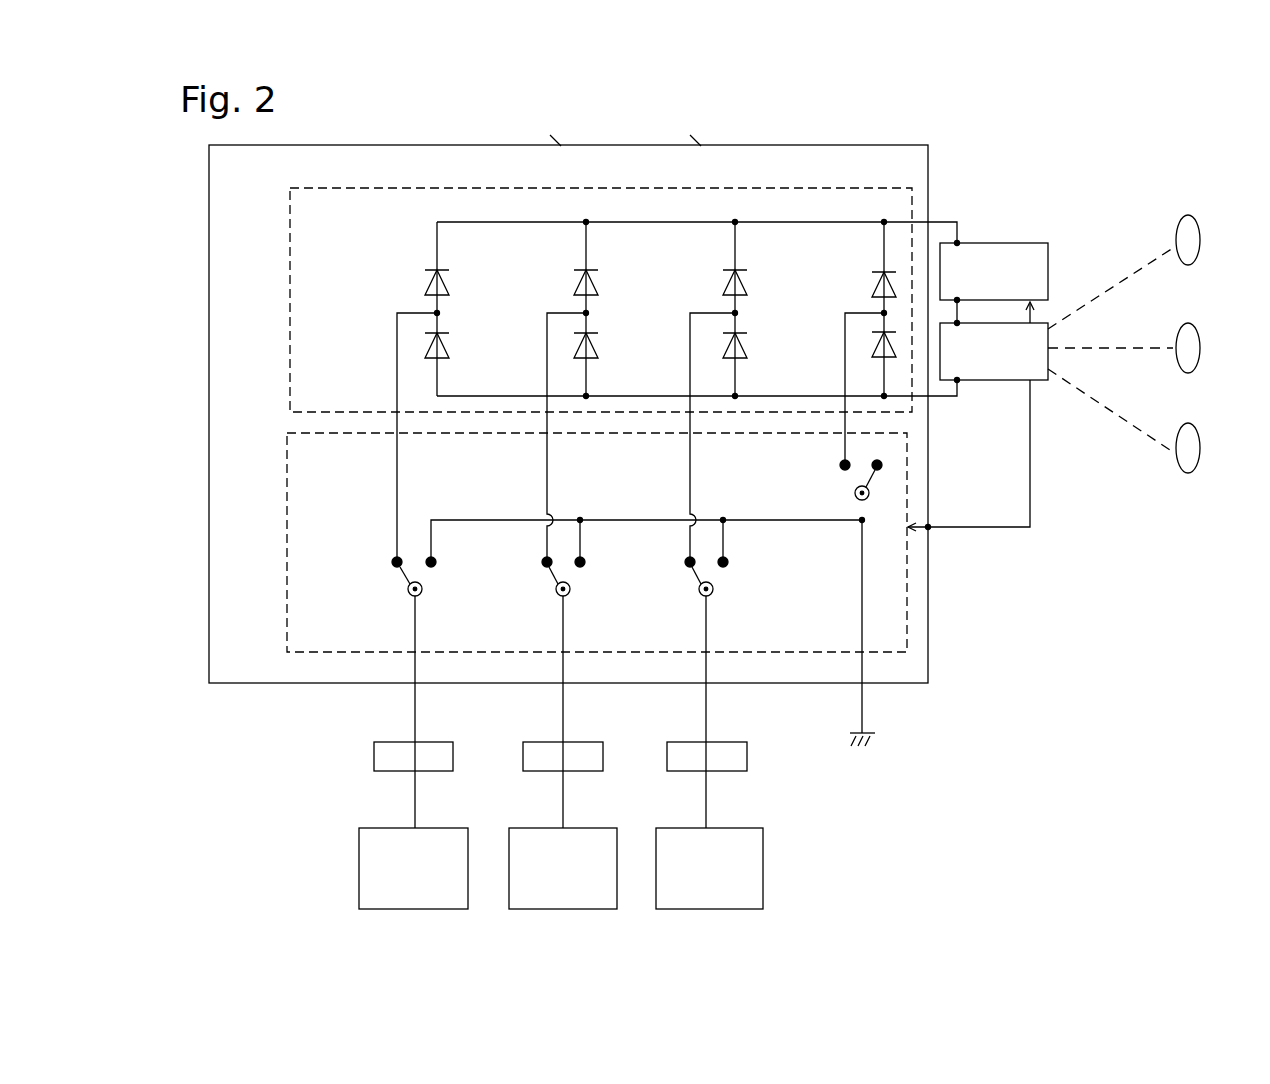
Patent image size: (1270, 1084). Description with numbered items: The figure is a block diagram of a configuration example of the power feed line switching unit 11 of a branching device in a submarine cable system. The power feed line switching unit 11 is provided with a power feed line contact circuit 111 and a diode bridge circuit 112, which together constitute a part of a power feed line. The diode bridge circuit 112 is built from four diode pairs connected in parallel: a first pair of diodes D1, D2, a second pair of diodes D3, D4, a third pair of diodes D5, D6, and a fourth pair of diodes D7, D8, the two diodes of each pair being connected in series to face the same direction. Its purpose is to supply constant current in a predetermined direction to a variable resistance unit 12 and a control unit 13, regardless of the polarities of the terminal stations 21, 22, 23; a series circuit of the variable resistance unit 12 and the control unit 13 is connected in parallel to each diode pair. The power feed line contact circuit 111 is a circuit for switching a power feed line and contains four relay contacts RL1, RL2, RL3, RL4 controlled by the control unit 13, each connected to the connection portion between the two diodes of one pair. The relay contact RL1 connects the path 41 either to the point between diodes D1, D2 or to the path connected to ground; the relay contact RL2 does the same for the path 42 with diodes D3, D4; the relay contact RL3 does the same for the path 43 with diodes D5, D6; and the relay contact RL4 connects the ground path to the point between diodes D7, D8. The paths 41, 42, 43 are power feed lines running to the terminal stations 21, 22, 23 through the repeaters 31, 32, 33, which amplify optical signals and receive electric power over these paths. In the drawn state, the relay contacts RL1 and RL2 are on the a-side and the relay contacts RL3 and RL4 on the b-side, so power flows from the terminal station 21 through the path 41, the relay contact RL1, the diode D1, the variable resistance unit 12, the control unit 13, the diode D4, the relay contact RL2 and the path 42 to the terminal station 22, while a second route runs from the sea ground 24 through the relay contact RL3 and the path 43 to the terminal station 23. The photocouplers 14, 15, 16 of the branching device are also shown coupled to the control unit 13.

The power feed line switching unit 11 is at (209, 170).
The power feed line contact circuit 111 is at (570, 583).
The diode bridge circuit 112 is at (594, 375).
The variable resistance unit 12 is at (1030, 243).
The control unit 13 is at (1040, 383).
The photocoupler 14 is at (1200, 240).
The photocoupler 15 is at (1200, 348).
The photocoupler 16 is at (1200, 448).
The terminal station 21 is at (359, 858).
The terminal station 22 is at (584, 828).
The terminal station 23 is at (763, 848).
The sea ground 24 is at (872, 731).
The repeater 31 is at (435, 742).
The repeater 32 is at (585, 742).
The repeater 33 is at (730, 742).
The path 41 is at (415, 806).
The path 42 is at (563, 808).
The path 43 is at (706, 806).
The diode D1 is at (447, 287).
The diode D2 is at (447, 350).
The diode D3 is at (596, 287).
The diode D4 is at (596, 350).
The diode D5 is at (746, 287).
The diode D6 is at (746, 350).
The diode D7 is at (878, 272).
The diode D8 is at (878, 356).
The relay contact RL1 is at (423, 591).
The relay contact RL2 is at (571, 591).
The relay contact RL3 is at (714, 591).
The relay contact RL4 is at (853, 493).